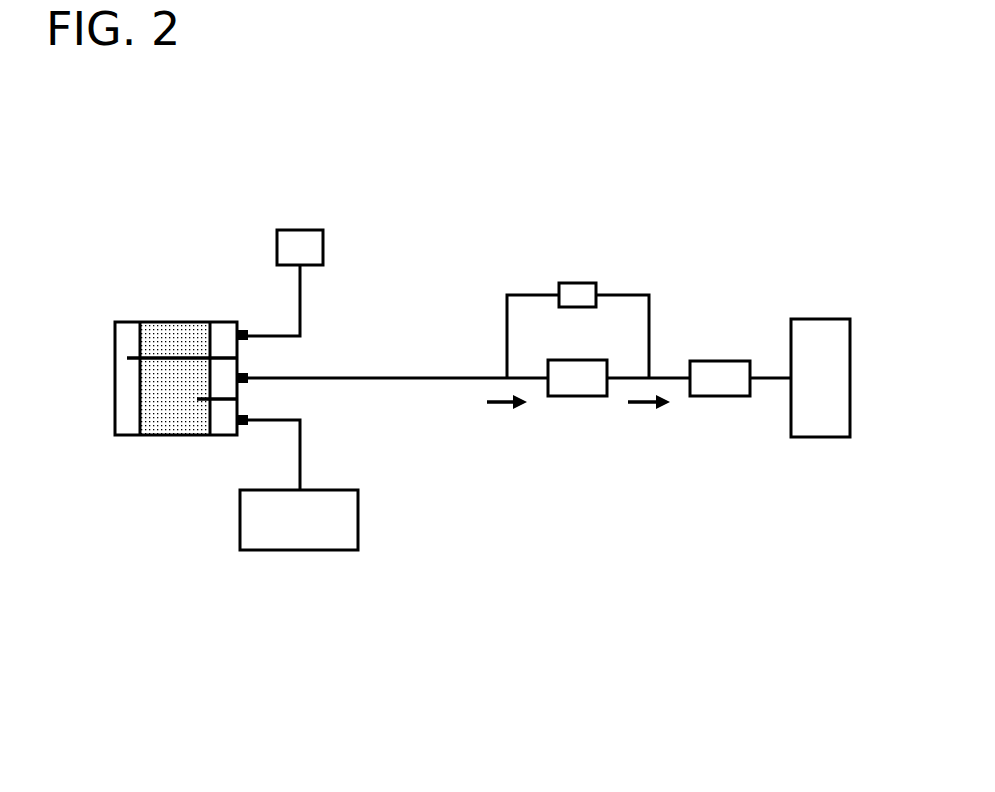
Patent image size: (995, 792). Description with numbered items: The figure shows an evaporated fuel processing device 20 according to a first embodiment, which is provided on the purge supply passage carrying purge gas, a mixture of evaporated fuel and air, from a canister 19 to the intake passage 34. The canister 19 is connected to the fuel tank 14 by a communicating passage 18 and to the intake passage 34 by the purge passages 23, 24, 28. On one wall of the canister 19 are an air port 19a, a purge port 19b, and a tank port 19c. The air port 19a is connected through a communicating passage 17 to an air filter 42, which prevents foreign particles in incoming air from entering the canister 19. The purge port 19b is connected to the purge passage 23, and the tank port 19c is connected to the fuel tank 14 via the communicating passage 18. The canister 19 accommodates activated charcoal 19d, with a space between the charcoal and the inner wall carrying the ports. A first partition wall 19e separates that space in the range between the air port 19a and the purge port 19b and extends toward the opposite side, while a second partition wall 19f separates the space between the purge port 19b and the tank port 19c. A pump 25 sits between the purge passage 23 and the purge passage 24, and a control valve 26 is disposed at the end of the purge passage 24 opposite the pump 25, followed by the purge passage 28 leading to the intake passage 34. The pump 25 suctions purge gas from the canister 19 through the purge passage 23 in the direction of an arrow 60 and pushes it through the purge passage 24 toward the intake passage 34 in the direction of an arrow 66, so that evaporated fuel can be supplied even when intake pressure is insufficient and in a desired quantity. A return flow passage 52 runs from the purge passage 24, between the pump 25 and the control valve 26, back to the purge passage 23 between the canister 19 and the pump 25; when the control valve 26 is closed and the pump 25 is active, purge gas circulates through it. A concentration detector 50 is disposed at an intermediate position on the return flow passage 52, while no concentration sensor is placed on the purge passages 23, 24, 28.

The fuel tank 14 is at (359, 510).
The communicating passage 17 is at (301, 297).
The communicating passage 18 is at (301, 466).
The canister 19 is at (175, 310).
The air port 19a is at (242, 332).
The purge port 19b is at (246, 377).
The tank port 19c is at (246, 418).
The activated charcoal 19d is at (152, 418).
The first partition wall 19e is at (137, 356).
The second partition wall 19f is at (205, 399).
The evaporated fuel processing device 20 is at (660, 195).
The purge passage 23 is at (420, 380).
The purge passage 24 is at (667, 377).
The pump 25 is at (578, 388).
The control valve 26 is at (720, 388).
The purge passage 28 is at (758, 370).
The intake passage 34 is at (820, 430).
The air filter 42 is at (324, 241).
The concentration detector 50 is at (578, 290).
The return flow passage 52 is at (525, 294).
The arrow 60 is at (493, 405).
The arrow 66 is at (637, 405).